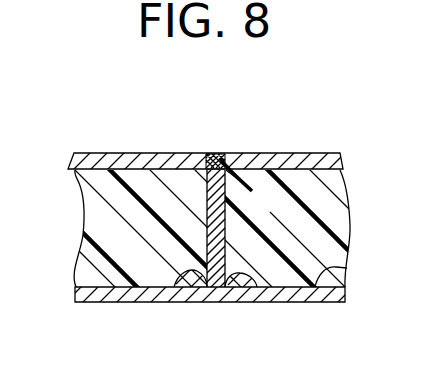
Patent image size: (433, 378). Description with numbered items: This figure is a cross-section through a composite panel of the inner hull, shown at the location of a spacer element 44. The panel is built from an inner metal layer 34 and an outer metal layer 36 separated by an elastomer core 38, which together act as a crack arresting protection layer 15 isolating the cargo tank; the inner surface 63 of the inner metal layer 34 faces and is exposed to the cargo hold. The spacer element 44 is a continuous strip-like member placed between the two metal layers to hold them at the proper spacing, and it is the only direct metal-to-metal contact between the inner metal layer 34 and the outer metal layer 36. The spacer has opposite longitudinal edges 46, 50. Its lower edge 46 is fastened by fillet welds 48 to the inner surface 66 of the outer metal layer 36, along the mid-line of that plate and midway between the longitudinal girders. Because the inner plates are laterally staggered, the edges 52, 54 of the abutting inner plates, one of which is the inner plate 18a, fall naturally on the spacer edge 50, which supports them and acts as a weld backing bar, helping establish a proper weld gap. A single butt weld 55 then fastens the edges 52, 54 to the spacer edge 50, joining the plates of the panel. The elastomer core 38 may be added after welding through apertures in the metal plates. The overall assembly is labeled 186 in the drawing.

The inner metal layer 34 is at (78, 154).
The outer metal layer 36 is at (108, 295).
The elastomer core 38 is at (108, 215).
The crack arresting protection layer 15 is at (333, 213).
The longitudinal edge of spacer 46 is at (220, 287).
The fillet welds 48 is at (180, 279).
The spacer edge 50 is at (273, 204).
The edge of inner plate 52 is at (205, 155).
The edge of inner plate 54 is at (238, 158).
The butt weld 55 is at (212, 158).
The inner plate 18a is at (145, 153).
The assembly 186 is at (322, 150).
The inner surface 63 is at (334, 157).
The spacer element 44 is at (207, 224).
The inner surface of outer plate 66 is at (347, 268).